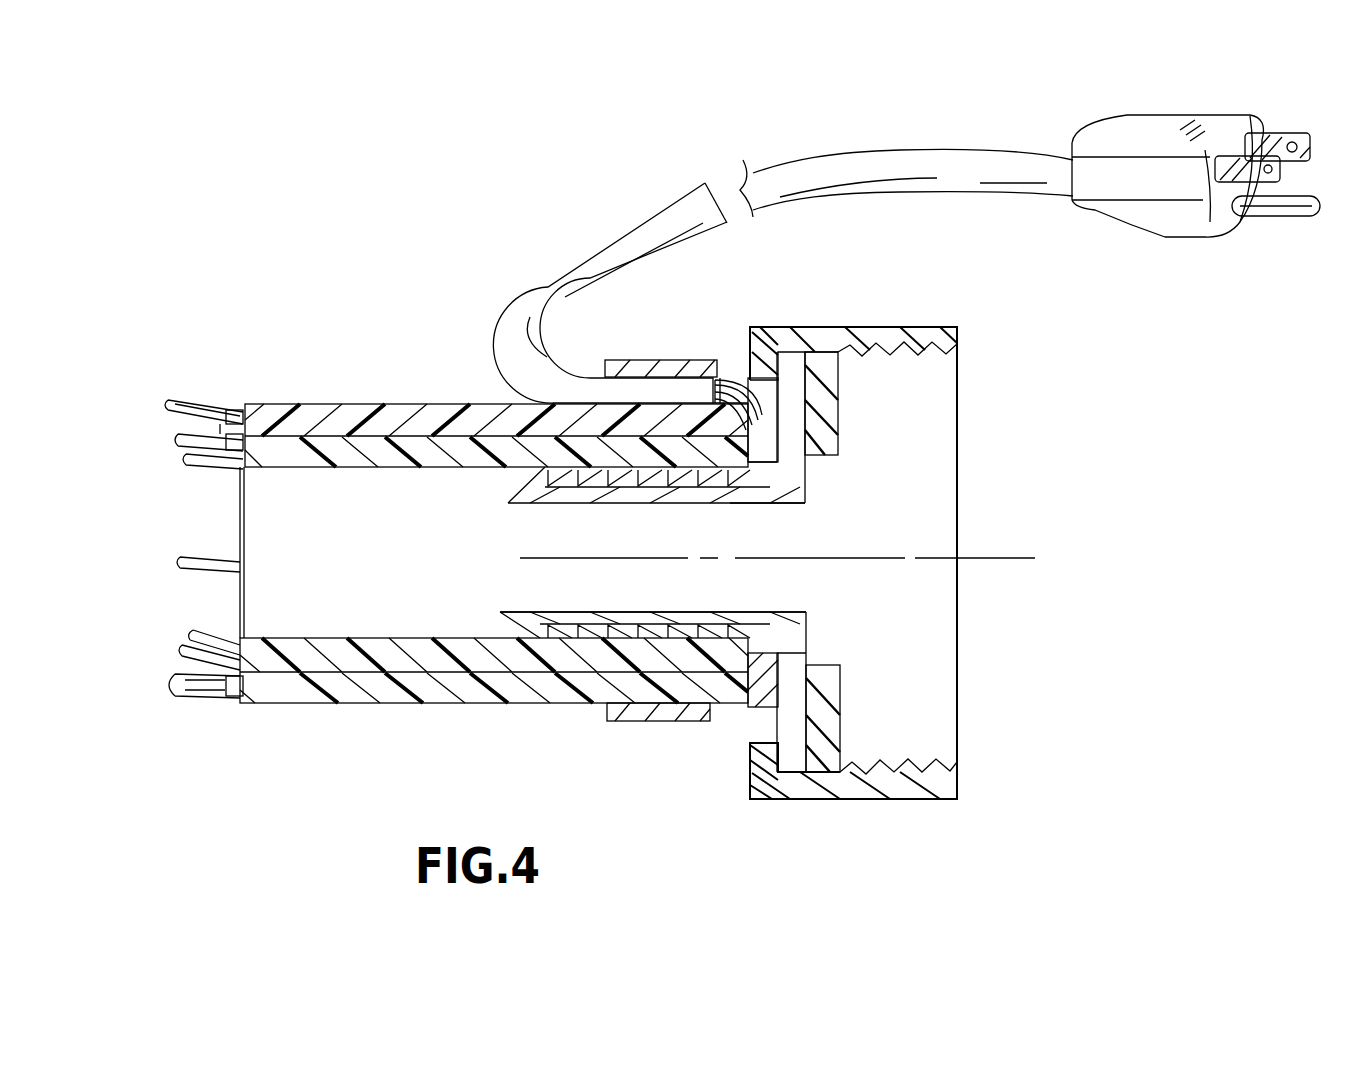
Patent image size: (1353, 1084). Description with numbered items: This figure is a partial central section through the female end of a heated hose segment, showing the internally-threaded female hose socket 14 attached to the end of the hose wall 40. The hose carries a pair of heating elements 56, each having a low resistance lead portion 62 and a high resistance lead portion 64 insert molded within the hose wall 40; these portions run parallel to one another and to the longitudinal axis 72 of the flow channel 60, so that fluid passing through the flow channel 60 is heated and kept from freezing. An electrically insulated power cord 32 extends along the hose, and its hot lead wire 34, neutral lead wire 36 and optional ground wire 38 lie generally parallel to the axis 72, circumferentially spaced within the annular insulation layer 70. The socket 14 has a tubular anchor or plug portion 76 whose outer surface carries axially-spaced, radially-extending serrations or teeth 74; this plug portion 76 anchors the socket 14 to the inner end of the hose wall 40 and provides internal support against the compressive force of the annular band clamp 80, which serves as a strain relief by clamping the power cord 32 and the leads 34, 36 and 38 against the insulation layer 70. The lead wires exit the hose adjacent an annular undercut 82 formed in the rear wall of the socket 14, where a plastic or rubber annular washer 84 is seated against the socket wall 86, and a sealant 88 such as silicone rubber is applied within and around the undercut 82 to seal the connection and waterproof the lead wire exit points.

The female hose socket 14 is at (867, 800).
The power cord 32 is at (563, 278).
The hot lead wire 34 is at (215, 400).
The neutral lead wire 36 is at (730, 378).
The ground wire 38 is at (225, 563).
The hose wall 40 is at (1150, 220).
The heating element 56 is at (235, 408).
The flow channel 60 is at (363, 597).
The low resistance lead portion 62 is at (244, 500).
The high resistance lead portion 64 is at (170, 460).
The insulation layer 70 is at (428, 402).
The longitudinal axis 72 is at (1012, 556).
The serrations or teeth 74 is at (512, 488).
The tubular anchor or plug portion 76 is at (620, 505).
The band clamp 80 is at (650, 360).
The annular undercut 82 is at (765, 720).
The annular washer 84 is at (838, 420).
The socket wall 86 is at (806, 612).
The sealant 88 is at (820, 662).